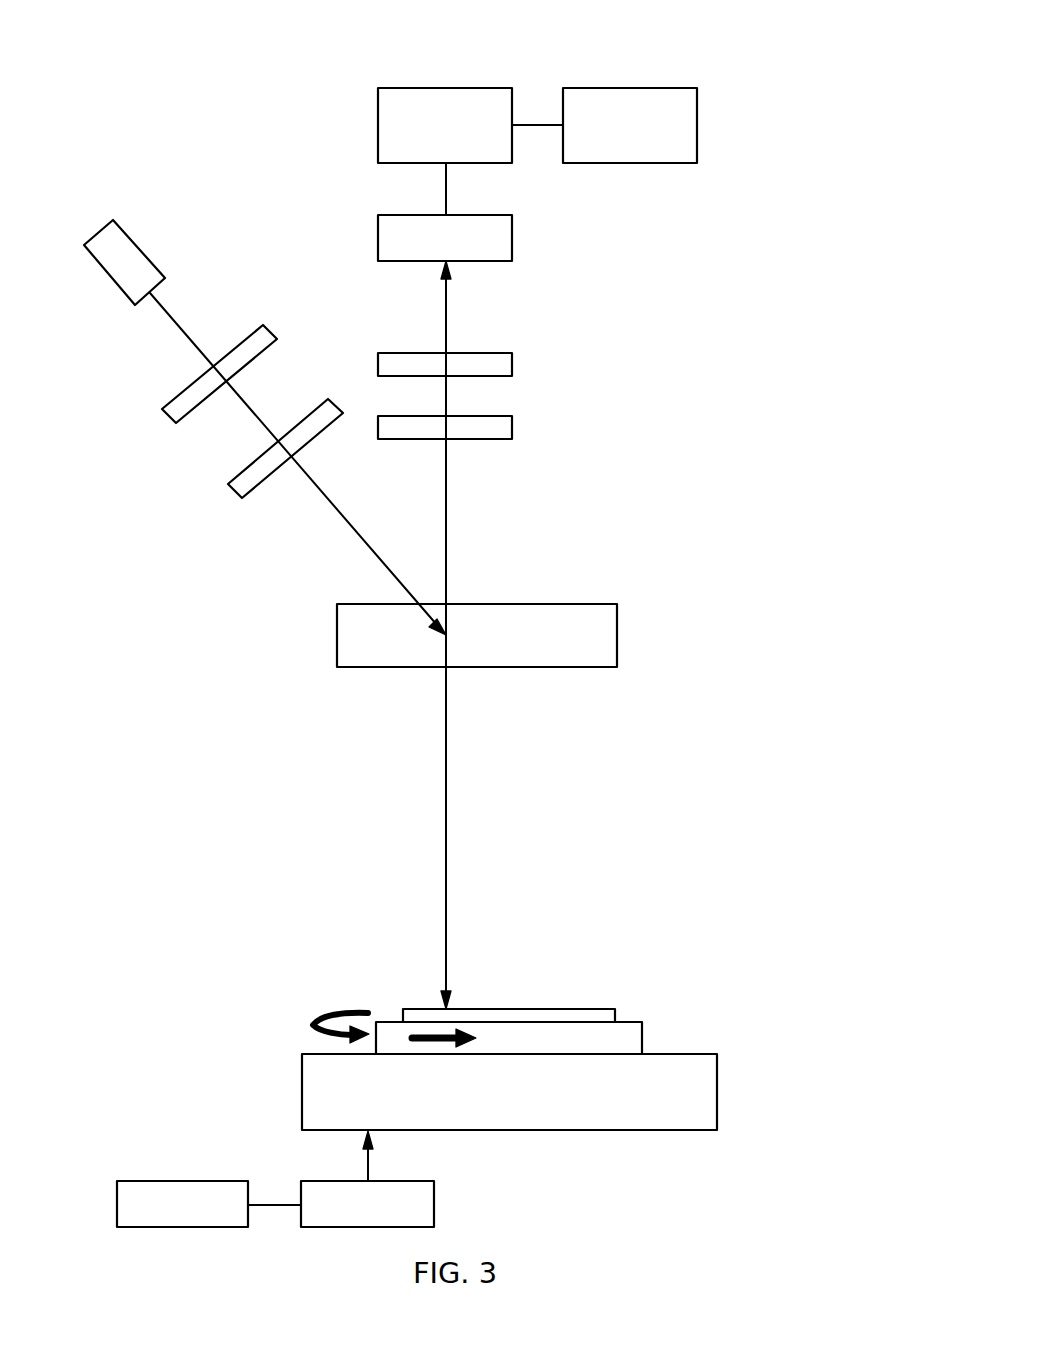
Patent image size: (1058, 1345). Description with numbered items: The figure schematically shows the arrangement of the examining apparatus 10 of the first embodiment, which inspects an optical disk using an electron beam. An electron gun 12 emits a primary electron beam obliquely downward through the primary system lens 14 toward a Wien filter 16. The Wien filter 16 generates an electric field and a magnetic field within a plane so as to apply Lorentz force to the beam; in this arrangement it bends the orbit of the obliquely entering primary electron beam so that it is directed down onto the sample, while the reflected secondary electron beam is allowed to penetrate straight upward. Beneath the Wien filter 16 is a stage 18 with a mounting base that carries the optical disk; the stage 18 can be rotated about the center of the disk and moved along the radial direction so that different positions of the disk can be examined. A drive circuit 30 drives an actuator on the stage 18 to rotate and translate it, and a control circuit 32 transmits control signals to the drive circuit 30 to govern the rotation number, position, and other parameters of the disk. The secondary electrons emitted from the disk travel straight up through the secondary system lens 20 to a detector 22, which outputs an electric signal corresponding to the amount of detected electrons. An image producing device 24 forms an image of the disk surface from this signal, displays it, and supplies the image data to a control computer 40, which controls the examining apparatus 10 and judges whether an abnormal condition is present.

The examining apparatus 10 is at (184, 82).
The electron gun 12 is at (141, 245).
The primary system lens 14 is at (243, 508).
The Wien filter 16 is at (617, 634).
The stage 18 is at (632, 1032).
The secondary system lens 20 is at (517, 348).
The detector 22 is at (378, 238).
The image producing device 24 is at (378, 125).
The drive circuit 30 is at (434, 1200).
The control circuit 32 is at (183, 1181).
The control computer 40 is at (697, 125).